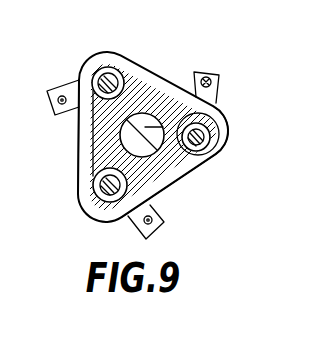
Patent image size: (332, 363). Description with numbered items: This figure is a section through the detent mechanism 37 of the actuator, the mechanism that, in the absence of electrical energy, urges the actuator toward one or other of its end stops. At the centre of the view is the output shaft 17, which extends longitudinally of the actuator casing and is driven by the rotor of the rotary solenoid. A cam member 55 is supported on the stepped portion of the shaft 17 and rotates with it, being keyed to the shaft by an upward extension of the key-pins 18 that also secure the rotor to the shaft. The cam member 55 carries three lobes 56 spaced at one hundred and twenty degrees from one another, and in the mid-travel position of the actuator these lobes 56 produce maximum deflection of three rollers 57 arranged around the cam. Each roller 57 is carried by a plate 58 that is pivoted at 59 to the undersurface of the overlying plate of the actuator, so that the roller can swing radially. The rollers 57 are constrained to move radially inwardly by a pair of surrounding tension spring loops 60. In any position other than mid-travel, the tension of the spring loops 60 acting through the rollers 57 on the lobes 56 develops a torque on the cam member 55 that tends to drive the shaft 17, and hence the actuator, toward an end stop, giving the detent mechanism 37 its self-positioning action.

The detent mechanism 37 is at (164, 42).
The key-pins 18 is at (160, 74).
The cam member 55 is at (98, 143).
The lobes 56 is at (80, 163).
The output shaft 17 is at (216, 116).
The rollers 57 is at (124, 66).
The plates 58 is at (72, 88).
The pivots 59 is at (55, 102).
The tension spring loops 60 is at (205, 161).